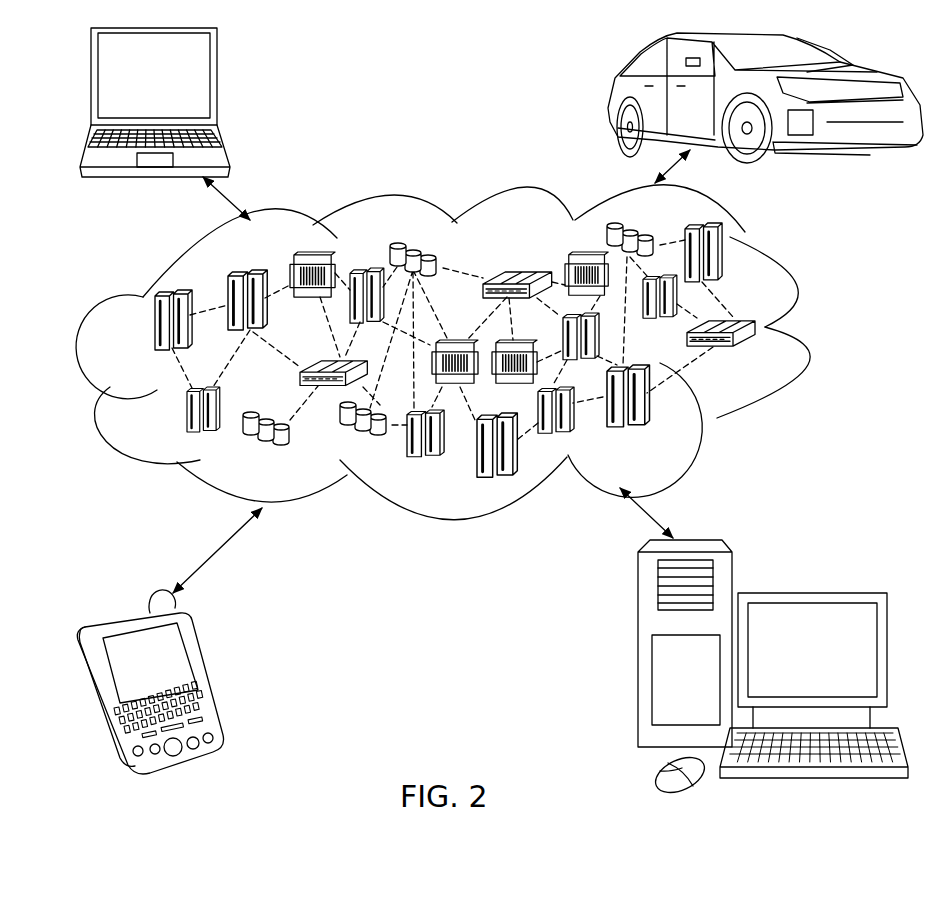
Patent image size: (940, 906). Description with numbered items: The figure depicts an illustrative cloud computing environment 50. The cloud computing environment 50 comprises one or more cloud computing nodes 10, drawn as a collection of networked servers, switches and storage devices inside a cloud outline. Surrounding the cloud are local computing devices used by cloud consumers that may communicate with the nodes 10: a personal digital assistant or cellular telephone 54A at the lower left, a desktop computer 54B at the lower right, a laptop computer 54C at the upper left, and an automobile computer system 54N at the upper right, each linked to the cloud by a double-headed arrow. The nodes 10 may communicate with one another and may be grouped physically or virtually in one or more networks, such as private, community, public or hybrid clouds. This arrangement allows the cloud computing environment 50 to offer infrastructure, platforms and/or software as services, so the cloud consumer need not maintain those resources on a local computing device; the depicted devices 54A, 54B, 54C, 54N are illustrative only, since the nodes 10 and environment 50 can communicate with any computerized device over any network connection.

The cloud computing node 10 is at (764, 360).
The cloud computing environment 50 is at (812, 331).
The personal digital assistant or cellular telephone 54A is at (208, 672).
The desktop computer 54B is at (808, 593).
The laptop computer 54C is at (217, 82).
The automobile computer system 54N is at (610, 99).